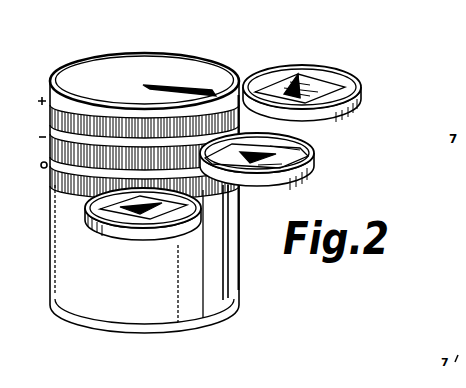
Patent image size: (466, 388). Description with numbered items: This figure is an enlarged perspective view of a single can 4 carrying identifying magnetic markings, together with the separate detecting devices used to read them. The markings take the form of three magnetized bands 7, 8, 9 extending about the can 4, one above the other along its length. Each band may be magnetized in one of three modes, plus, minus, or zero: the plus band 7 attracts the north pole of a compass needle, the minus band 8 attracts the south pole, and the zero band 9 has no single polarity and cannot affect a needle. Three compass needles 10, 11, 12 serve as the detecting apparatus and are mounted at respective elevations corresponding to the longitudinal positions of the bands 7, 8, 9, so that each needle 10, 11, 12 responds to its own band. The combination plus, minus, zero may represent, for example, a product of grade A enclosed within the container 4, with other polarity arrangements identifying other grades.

The can 4 is at (230, 82).
The magnetized band 7 is at (50, 111).
The magnetized band 8 is at (50, 142).
The magnetized band 9 is at (50, 178).
The compass needle 10 is at (362, 84).
The compass needle 11 is at (314, 160).
The compass needle 12 is at (183, 229).